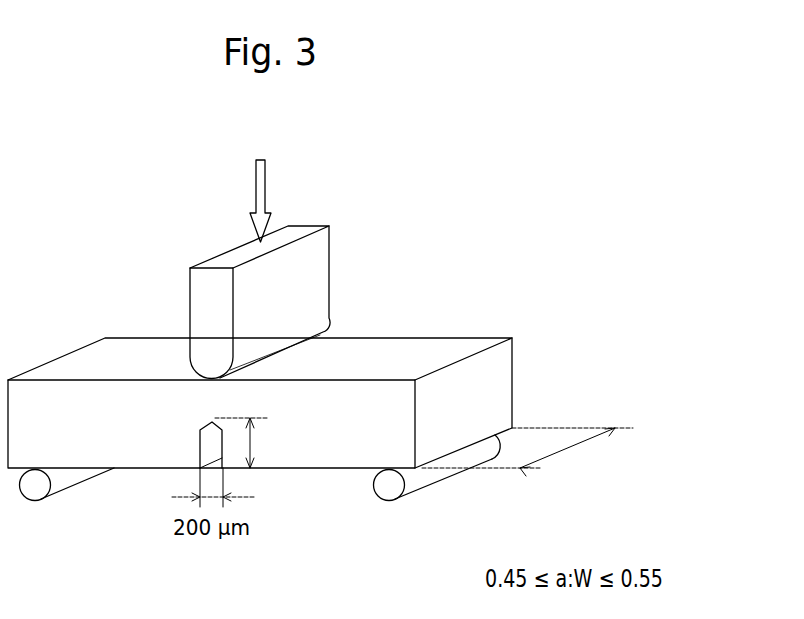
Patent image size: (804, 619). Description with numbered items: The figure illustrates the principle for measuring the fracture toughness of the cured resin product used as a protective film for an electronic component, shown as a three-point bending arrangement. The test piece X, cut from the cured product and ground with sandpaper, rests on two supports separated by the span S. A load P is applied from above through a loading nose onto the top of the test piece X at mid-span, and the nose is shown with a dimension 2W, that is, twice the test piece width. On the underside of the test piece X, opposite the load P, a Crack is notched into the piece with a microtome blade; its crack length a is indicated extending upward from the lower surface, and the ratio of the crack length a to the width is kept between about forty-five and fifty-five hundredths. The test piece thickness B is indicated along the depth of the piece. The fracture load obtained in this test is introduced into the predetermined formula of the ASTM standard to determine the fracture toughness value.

The test piece X is at (502, 375).
The load P is at (260, 183).
The twice the test piece width 2W is at (35, 573).
The crack Crack is at (212, 421).
The crack length a is at (245, 443).
The test piece thickness B is at (527, 452).
The span S is at (388, 500).